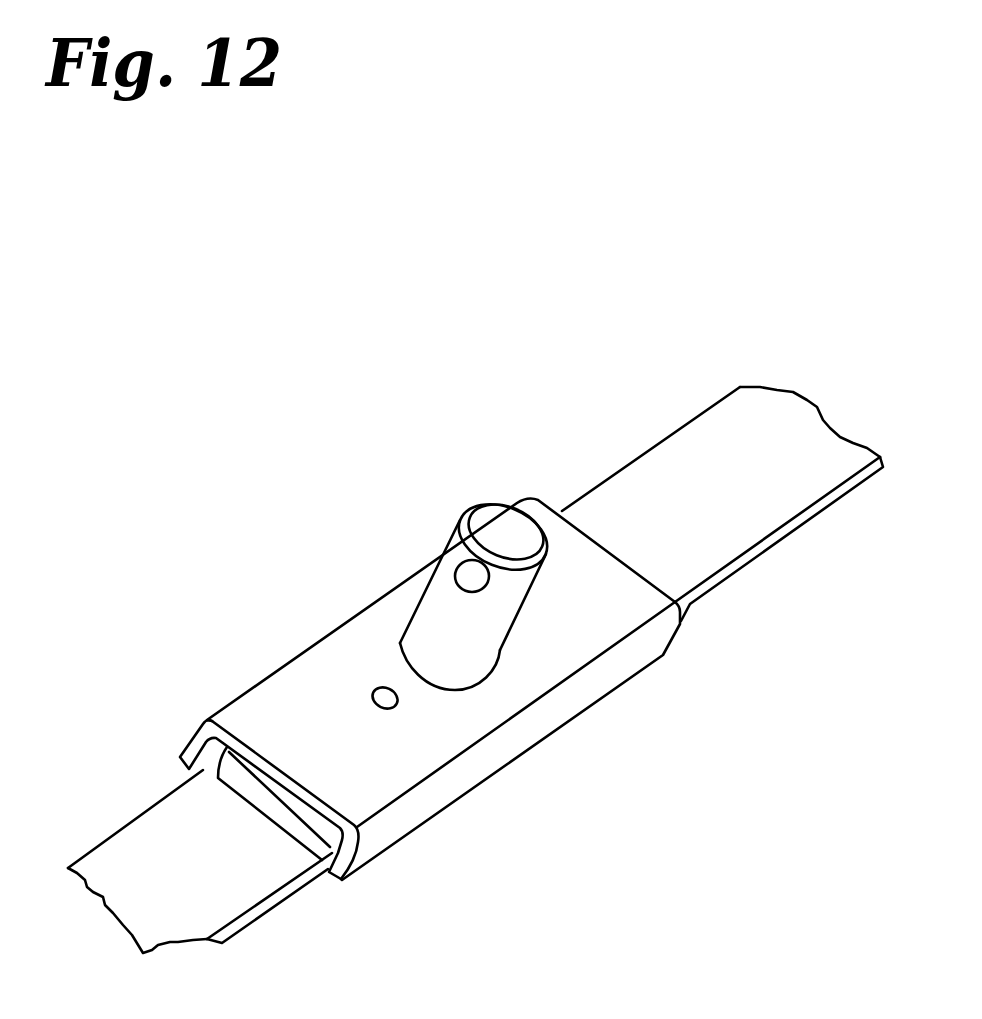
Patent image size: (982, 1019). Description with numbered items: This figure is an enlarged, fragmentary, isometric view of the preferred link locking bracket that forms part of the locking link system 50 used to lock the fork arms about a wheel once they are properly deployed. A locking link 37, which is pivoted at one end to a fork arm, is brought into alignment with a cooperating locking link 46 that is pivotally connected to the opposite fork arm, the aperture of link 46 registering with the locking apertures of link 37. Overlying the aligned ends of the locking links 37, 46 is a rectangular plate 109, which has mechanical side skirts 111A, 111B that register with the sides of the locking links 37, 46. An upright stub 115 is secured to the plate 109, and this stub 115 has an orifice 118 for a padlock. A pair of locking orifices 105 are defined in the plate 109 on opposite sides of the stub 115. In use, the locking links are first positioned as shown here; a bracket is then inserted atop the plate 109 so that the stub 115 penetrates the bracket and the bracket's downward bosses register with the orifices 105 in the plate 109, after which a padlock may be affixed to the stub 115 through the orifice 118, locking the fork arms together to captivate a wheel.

The locking link 37 is at (748, 477).
The cooperating locking link 46 is at (208, 868).
The locking link system 50 is at (375, 648).
The locking orifices 105 is at (375, 690).
The rectangular plate 109 is at (403, 749).
The side skirt 111A is at (152, 718).
The side skirt 111B is at (433, 835).
The upright stub 115 is at (506, 647).
The orifice 118 is at (456, 562).